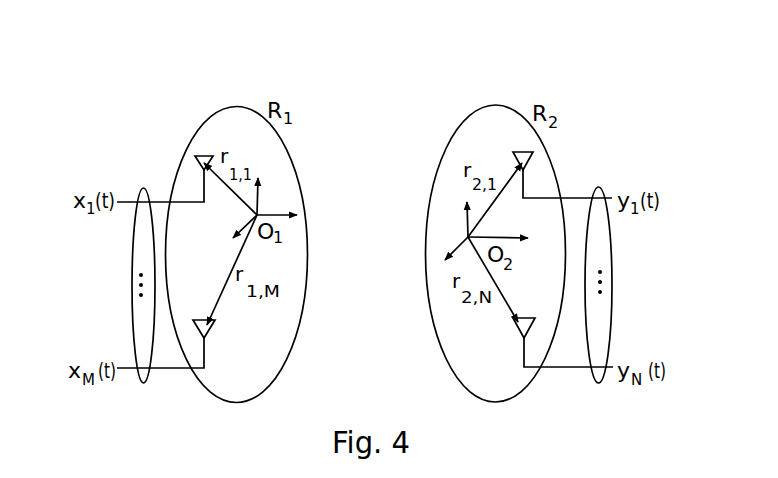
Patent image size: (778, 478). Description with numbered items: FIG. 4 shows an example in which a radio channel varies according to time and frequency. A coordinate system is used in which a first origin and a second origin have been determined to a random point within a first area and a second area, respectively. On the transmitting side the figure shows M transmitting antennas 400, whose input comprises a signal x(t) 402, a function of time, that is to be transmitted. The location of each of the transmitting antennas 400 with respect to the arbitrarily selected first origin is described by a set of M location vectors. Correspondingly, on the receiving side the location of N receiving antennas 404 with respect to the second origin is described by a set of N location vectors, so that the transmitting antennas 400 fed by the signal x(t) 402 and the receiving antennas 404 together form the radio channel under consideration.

The transmitting antennas 400 is at (160, 200).
The signal x(t) 402 is at (148, 380).
The receiving antennas 404 is at (580, 198).